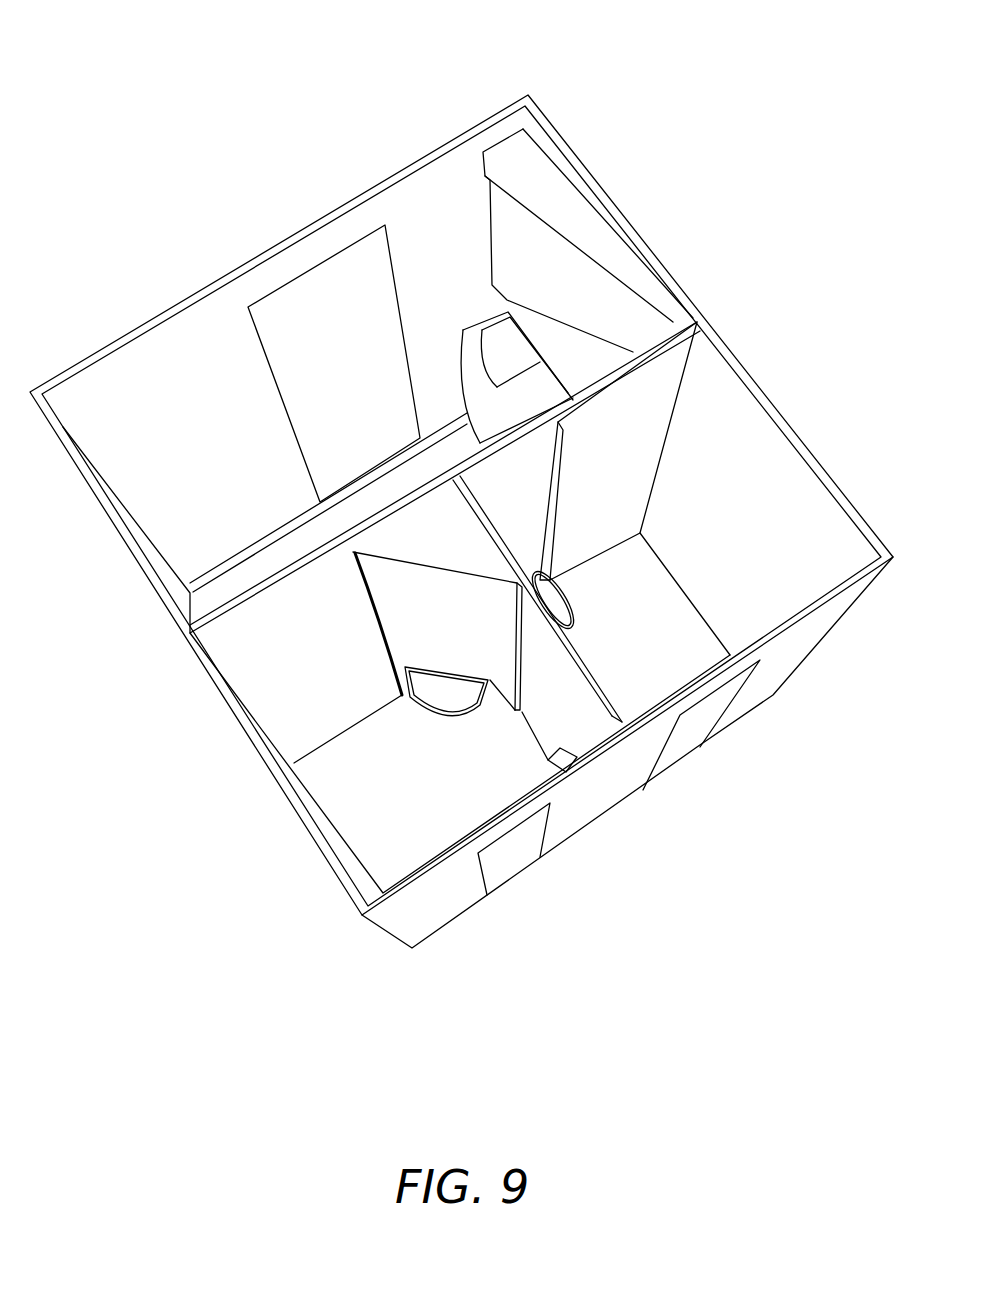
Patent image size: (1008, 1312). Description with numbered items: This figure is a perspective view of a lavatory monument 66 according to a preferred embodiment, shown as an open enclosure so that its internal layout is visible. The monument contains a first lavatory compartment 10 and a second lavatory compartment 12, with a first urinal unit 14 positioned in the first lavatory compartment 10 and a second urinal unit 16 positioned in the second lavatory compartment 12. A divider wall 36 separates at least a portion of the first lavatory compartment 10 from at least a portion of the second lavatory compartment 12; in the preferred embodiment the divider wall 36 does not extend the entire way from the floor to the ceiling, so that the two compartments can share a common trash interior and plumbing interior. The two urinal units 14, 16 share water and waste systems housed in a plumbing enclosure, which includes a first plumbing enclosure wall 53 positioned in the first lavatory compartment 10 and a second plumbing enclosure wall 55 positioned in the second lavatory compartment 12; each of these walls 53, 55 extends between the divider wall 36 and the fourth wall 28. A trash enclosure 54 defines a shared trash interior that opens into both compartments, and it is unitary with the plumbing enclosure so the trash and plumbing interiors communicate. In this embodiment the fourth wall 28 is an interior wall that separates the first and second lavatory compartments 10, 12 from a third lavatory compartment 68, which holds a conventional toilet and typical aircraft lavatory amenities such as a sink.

The first lavatory compartment 10 is at (765, 480).
The second lavatory compartment 12 is at (345, 783).
The first urinal unit 14 is at (575, 600).
The second urinal unit 16 is at (445, 707).
The fourth wall 28 is at (227, 610).
The divider wall 36 is at (613, 718).
The first plumbing enclosure wall 53 is at (553, 515).
The trash enclosure 54 is at (547, 740).
The second plumbing enclosure wall 55 is at (393, 605).
The lavatory monument 66 is at (582, 110).
The third lavatory compartment 68 is at (150, 362).